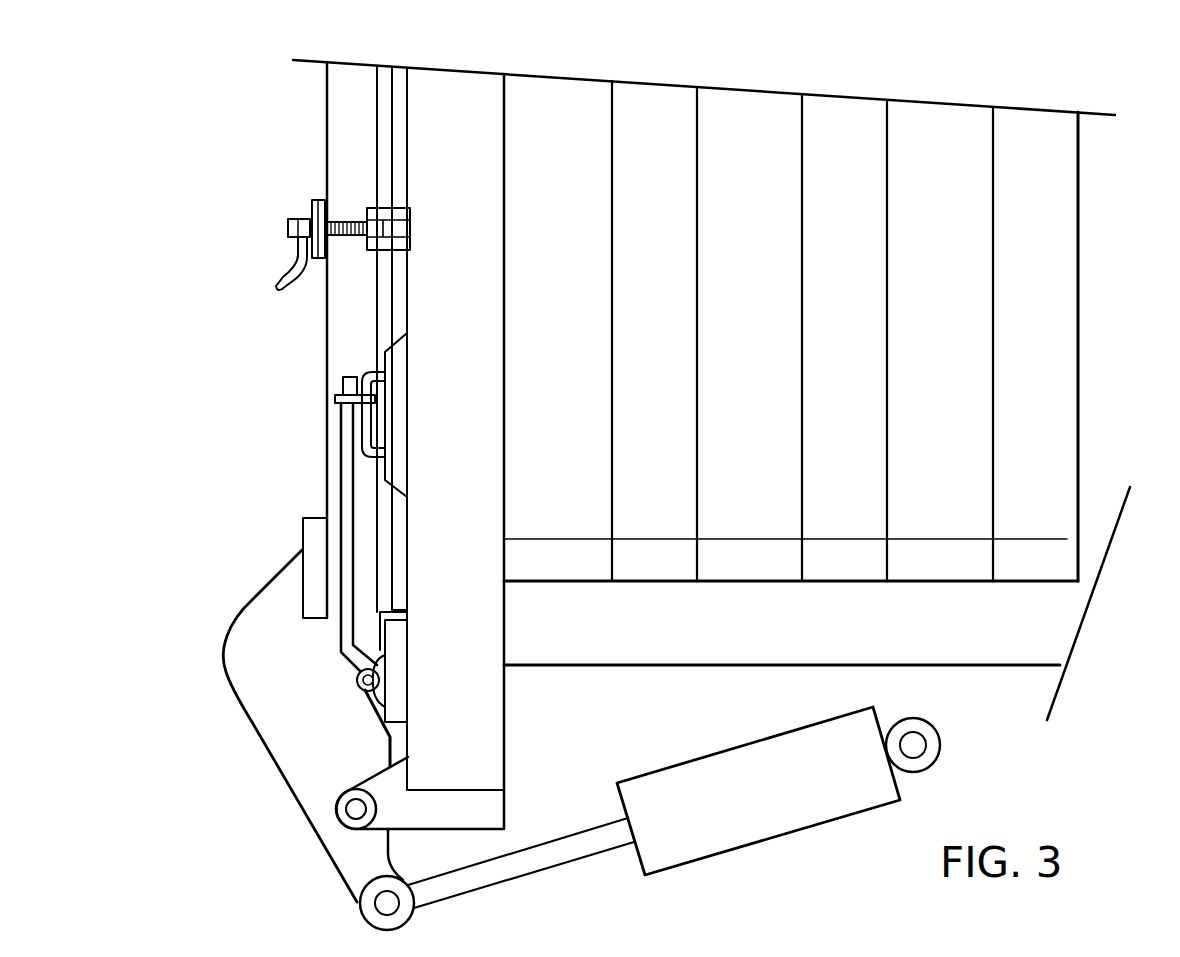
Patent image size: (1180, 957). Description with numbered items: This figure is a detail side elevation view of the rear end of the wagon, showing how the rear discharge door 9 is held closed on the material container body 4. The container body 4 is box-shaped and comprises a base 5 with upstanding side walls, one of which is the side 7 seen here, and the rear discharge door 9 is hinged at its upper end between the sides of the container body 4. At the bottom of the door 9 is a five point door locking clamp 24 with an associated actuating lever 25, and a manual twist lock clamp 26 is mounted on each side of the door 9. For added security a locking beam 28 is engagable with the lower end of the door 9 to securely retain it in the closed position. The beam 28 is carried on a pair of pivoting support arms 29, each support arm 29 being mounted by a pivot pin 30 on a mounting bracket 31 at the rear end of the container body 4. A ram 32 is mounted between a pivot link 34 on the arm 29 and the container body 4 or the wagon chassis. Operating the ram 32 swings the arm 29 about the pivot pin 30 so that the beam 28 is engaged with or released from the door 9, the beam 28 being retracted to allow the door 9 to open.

The material container body 4 is at (688, 667).
The base 5 is at (1040, 644).
The side 7 is at (1080, 268).
The rear discharge door 9 is at (325, 349).
The five point door locking clamp 24 is at (362, 683).
The actuating lever 25 is at (345, 434).
The manual twist lock clamp 26 is at (278, 262).
The locking beam 28 is at (312, 590).
The pivoting support arm 29 is at (262, 703).
The pivot pin 30 is at (354, 812).
The mounting bracket 31 is at (437, 813).
The ram 32 is at (780, 752).
The pivot link 34 is at (387, 903).